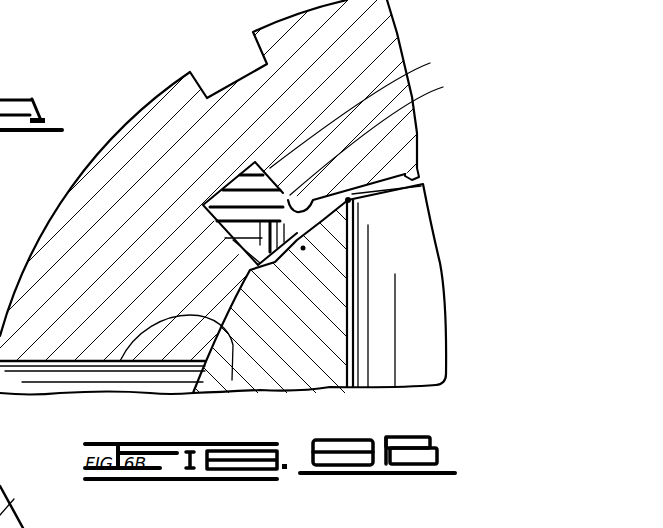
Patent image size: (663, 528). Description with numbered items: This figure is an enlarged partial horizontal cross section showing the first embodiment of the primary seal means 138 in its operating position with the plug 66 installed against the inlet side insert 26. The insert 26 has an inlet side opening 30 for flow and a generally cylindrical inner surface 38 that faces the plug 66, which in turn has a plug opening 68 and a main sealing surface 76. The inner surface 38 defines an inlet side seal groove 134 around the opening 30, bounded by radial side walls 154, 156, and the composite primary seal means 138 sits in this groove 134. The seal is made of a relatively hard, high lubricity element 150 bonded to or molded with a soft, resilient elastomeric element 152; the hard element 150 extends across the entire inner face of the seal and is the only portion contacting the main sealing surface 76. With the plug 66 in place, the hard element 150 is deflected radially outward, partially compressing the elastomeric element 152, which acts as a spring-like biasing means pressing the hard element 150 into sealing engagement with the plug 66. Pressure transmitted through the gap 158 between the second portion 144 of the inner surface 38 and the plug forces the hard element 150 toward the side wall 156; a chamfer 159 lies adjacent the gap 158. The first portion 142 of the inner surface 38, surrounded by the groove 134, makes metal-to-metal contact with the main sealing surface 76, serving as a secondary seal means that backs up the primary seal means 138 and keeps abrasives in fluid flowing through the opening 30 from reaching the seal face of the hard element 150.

The inlet side insert 26 is at (172, 128).
The inlet side seal groove 134 is at (250, 163).
The elastomeric element 152 is at (222, 205).
The side wall of groove 156 is at (232, 219).
The side wall of groove 154 is at (366, 110).
The chamfer 159 is at (383, 137).
The second portion of inner surface 144 is at (413, 177).
The gap 158 is at (423, 184).
The inlet side inner surface 38 is at (355, 208).
The primary seal means 138 is at (305, 248).
The plug opening 68 is at (350, 279).
The hard element 150 is at (300, 275).
The main sealing surface 76 is at (120, 355).
The inlet side opening 30 is at (138, 362).
The first portion of inner surface 142 is at (232, 380).
The plug 66 is at (303, 344).